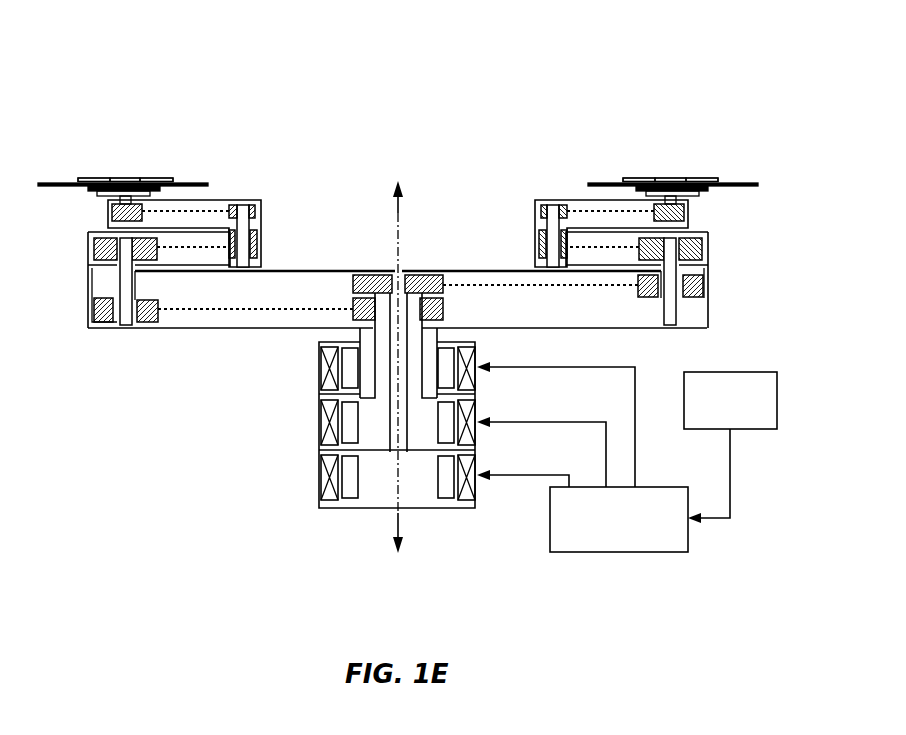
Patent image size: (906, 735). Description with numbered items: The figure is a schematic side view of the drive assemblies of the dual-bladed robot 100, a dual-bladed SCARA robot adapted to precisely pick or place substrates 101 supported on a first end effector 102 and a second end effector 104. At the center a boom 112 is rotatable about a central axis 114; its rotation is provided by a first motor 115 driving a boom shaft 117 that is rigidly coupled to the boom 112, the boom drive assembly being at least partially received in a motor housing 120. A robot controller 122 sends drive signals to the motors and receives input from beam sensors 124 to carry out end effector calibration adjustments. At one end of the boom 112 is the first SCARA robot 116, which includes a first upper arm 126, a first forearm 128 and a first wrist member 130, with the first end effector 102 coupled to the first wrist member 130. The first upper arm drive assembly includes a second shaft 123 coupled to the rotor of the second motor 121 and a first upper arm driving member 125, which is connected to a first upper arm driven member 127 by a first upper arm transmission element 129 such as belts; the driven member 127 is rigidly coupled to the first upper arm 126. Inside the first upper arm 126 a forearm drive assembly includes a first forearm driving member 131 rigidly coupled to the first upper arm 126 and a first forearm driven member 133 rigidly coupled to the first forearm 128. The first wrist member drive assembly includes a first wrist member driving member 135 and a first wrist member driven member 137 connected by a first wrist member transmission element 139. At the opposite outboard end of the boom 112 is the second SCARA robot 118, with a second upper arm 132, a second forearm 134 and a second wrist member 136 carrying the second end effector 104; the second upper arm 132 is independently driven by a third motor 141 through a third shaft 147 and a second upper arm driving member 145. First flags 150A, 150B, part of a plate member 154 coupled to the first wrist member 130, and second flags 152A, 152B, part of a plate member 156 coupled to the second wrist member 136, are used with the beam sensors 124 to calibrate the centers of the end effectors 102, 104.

The dual-bladed robot 100 is at (452, 70).
The substrate 101 is at (53, 184).
The first end effector 102 is at (103, 178).
The second end effector 104 is at (650, 178).
The boom 112 is at (470, 270).
The central axis 114 is at (403, 235).
The first motor 115 is at (313, 367).
The first SCARA robot 116 is at (110, 106).
The boom shaft 117 is at (358, 330).
The second SCARA robot 118 is at (691, 105).
The motor housing 120 is at (423, 508).
The second motor 121 is at (313, 423).
The robot controller 122 is at (662, 485).
The second shaft 123 is at (355, 394).
The beam sensors 124 is at (735, 371).
The first upper arm driving member 125 is at (353, 307).
The first upper arm 126 is at (90, 242).
The first upper arm driven member 127 is at (93, 307).
The first forearm 128 is at (243, 200).
The first upper arm transmission element 129 is at (230, 310).
The first wrist member 130 is at (97, 192).
The first forearm driving member 131 is at (97, 253).
The second upper arm 132 is at (705, 247).
The first forearm driven member 133 is at (260, 245).
The second forearm 134 is at (565, 199).
The first wrist member driving member 135 is at (257, 212).
The second wrist member 136 is at (697, 197).
The first wrist member driven member 137 is at (110, 215).
The first wrist member transmission element 139 is at (205, 210).
The third motor 141 is at (313, 474).
The second upper arm driving member 145 is at (352, 284).
The third shaft 147 is at (390, 444).
The first flag 150A is at (162, 178).
The first flag 150B is at (80, 178).
The second flag 152A is at (710, 178).
The second flag 152B is at (628, 178).
The plate member 154 is at (133, 178).
The plate member 156 is at (673, 178).